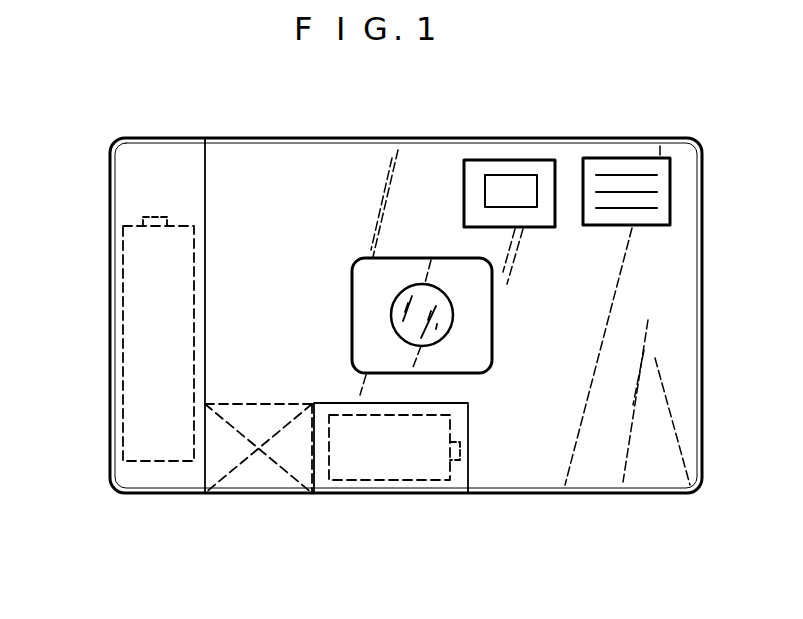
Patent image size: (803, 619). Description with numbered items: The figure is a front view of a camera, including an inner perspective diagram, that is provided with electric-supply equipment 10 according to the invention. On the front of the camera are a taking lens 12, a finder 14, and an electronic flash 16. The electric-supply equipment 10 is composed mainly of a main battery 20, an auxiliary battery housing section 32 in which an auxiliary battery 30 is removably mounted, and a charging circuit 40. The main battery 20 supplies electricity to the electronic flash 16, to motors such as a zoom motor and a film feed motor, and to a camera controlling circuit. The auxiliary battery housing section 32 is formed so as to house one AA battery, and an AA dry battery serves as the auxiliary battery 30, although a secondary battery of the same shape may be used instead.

The electric-supply equipment 10 is at (200, 526).
The taking lens 12 is at (445, 323).
The finder 14 is at (500, 185).
The electronic flash 16 is at (613, 168).
The main battery 20 is at (395, 470).
The auxiliary battery 30 is at (148, 348).
The auxiliary battery housing section 32 is at (110, 193).
The charging circuit 40 is at (272, 481).